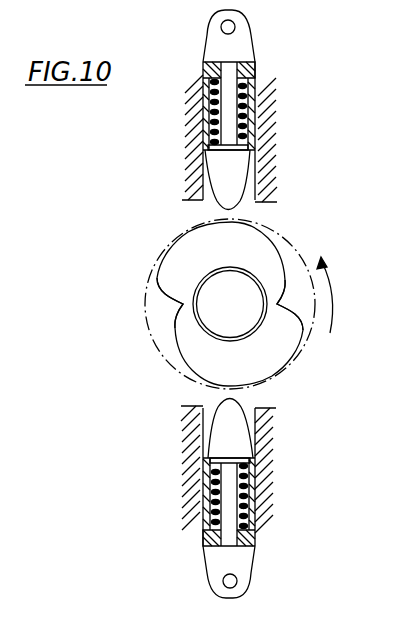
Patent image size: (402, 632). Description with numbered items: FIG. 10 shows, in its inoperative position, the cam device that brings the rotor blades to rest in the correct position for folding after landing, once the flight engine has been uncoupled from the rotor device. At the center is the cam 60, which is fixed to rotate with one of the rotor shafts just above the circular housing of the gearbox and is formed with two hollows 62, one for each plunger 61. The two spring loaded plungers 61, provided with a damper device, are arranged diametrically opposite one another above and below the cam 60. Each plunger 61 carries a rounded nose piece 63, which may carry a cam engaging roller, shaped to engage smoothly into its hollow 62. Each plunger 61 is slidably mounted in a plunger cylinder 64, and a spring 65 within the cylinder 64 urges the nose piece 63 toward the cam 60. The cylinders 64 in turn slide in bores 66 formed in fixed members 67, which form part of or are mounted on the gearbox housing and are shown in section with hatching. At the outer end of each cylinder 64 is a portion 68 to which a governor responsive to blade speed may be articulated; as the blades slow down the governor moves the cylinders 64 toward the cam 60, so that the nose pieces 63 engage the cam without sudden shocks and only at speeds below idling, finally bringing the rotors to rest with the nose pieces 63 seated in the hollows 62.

The cam 60 is at (270, 282).
The spring loaded plunger 61 is at (238, 173).
The hollow 62 is at (182, 303).
The rounded nose piece 63 is at (243, 216).
The plunger cylinder 64 is at (250, 125).
The spring 65 is at (208, 137).
The bore 66 is at (263, 200).
The fixed member 67 is at (262, 142).
The portion 68 is at (242, 50).